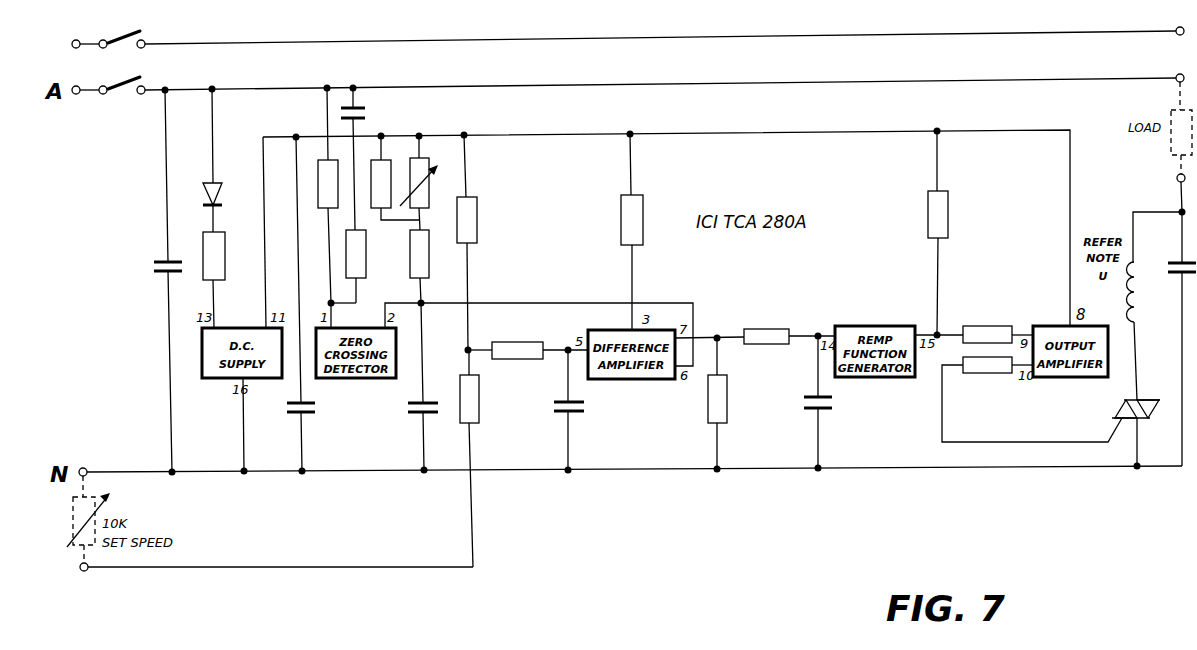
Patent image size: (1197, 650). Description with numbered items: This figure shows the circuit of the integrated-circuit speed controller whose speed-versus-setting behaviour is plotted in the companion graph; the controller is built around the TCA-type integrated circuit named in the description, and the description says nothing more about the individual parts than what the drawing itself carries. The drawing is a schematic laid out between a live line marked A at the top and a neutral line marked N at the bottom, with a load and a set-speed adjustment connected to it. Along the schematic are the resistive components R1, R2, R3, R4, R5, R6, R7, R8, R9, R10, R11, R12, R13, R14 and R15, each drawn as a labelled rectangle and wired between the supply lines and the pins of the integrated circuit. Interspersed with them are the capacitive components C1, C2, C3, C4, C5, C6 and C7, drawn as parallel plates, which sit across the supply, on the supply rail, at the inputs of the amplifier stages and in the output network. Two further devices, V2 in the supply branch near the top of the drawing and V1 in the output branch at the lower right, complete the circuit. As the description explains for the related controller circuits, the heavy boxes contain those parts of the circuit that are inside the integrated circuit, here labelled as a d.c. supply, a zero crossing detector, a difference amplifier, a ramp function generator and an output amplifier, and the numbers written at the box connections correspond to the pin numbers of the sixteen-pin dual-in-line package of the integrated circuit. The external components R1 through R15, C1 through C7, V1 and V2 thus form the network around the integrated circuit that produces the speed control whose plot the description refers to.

The resistor 4K7 9W R1 is at (227, 280).
The resistor 1M R2 is at (320, 195).
The resistor 330K R3 is at (650, 232).
The resistor 3K3 R4 is at (431, 255).
The resistor R5 is at (395, 178).
The resistor 82K R6 is at (998, 324).
The resistor 100K R7 is at (917, 233).
The resistor 27DK R8 is at (755, 325).
The resistor 150K R9 is at (736, 403).
The resistor 82E R10 is at (1032, 399).
The resistor 5K6 R11 is at (482, 242).
The resistor 10K R12 is at (528, 342).
The resistor 6K8 R13 is at (484, 458).
The variable resistor R14 is at (419, 172).
The resistor 1M R15 is at (370, 266).
The capacitor 630uF 25V C1 is at (312, 304).
The capacitor 22uF 25V C2 is at (575, 410).
The capacitor 1uF 50V C3 is at (416, 386).
The capacitor 1N5 C4 is at (821, 402).
The capacitor 0.22uF C5 is at (155, 281).
The capacitor 0.22uF 250V C6 is at (1173, 339).
The capacitor 1NF C7 is at (366, 159).
The triac BT139 V1 is at (1114, 433).
The diode 1N4007 V2 is at (218, 160).